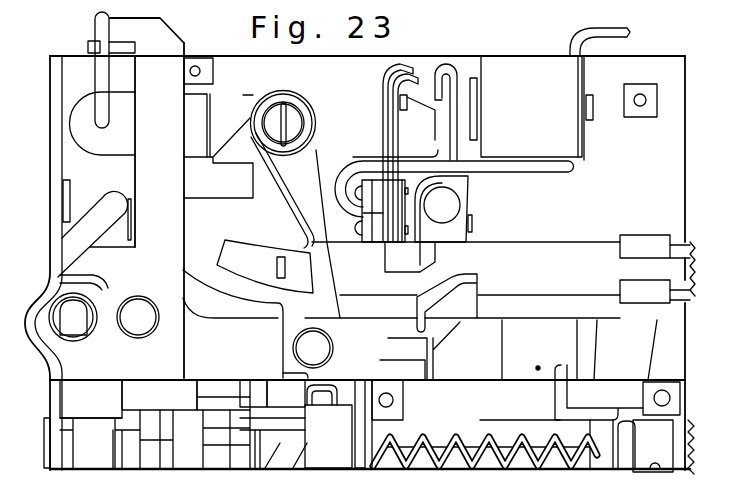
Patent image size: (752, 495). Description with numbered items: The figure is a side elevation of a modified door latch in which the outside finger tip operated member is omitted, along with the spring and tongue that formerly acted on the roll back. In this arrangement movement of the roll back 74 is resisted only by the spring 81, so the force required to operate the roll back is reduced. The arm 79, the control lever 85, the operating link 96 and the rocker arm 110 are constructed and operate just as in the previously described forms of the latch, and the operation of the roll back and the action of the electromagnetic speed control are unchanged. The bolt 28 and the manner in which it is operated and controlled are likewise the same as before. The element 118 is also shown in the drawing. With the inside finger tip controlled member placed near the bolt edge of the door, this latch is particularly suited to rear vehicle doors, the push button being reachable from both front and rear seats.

The bolt 28 is at (97, 455).
The control lever 85 is at (68, 260).
The roll back 74 is at (125, 213).
The arm 79 is at (219, 204).
The rocker arm 110 is at (249, 97).
The spring 81 is at (382, 112).
The housing block 118 is at (530, 60).
The operating link 96 is at (428, 380).